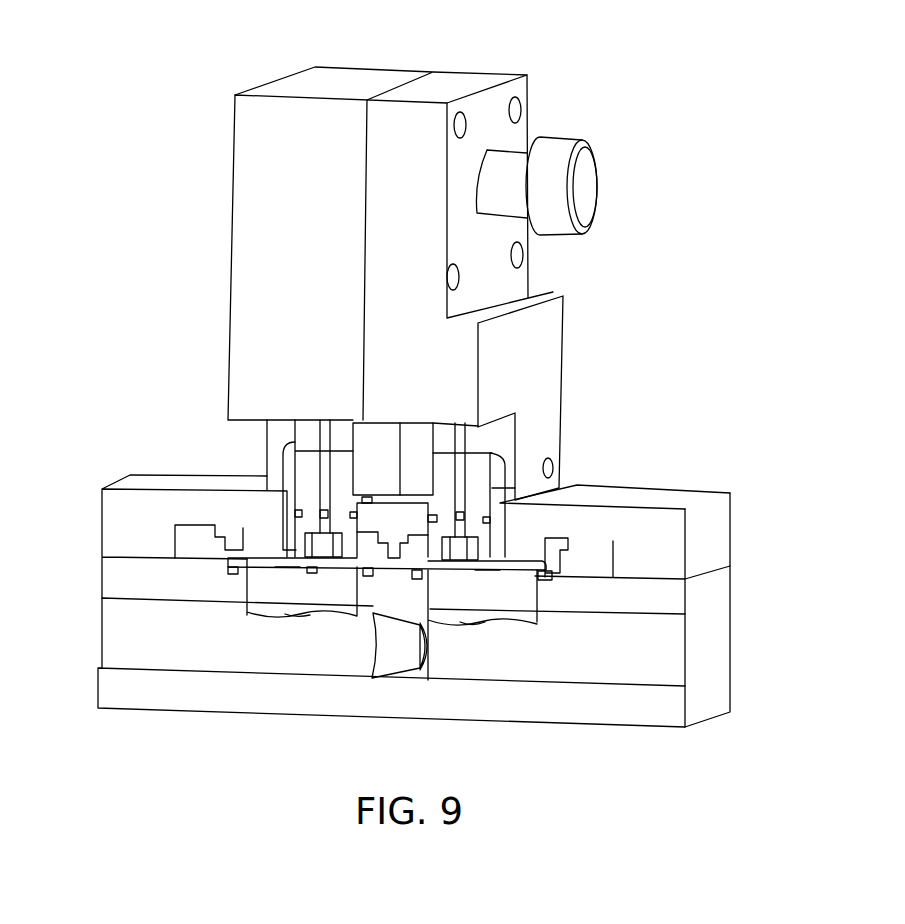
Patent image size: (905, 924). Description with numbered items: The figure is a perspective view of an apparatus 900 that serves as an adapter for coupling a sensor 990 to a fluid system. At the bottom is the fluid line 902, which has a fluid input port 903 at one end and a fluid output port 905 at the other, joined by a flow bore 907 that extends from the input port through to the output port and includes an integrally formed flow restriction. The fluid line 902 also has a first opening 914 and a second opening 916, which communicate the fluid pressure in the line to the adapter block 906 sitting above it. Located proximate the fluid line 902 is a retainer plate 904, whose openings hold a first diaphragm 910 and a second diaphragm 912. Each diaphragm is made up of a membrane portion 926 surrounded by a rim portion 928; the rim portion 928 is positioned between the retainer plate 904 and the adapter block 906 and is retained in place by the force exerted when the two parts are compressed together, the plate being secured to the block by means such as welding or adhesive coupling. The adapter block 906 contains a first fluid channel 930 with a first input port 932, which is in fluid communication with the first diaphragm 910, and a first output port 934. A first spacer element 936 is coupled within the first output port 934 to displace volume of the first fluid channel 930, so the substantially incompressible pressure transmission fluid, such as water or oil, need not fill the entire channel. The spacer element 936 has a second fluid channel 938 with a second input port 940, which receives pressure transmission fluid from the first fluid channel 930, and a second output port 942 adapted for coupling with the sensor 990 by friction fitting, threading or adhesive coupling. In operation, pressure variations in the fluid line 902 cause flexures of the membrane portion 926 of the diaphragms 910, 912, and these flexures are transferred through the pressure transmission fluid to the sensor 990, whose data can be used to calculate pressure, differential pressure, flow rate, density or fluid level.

The apparatus 900 is at (600, 89).
The sensor 990 is at (233, 129).
The second fluid channel 938 is at (445, 475).
The second output port 942 is at (460, 428).
The first output port 934 is at (483, 448).
The first fluid channel 930 is at (512, 488).
The first spacer element 936 is at (508, 526).
The second input port 940 is at (457, 538).
The first input port 932 is at (455, 568).
The retainer plate 904 is at (228, 570).
The first diaphragm 910 is at (287, 563).
The second diaphragm 912 is at (485, 569).
The adapter block 906 is at (101, 497).
The rim portion 928 is at (560, 564).
The fluid input port 903 is at (103, 631).
The membrane portion 926 is at (528, 622).
The first opening 914 is at (296, 616).
The second opening 916 is at (472, 621).
The flow bore 907 is at (383, 680).
The fluid line 902 is at (130, 703).
The fluid output port 905 is at (687, 652).